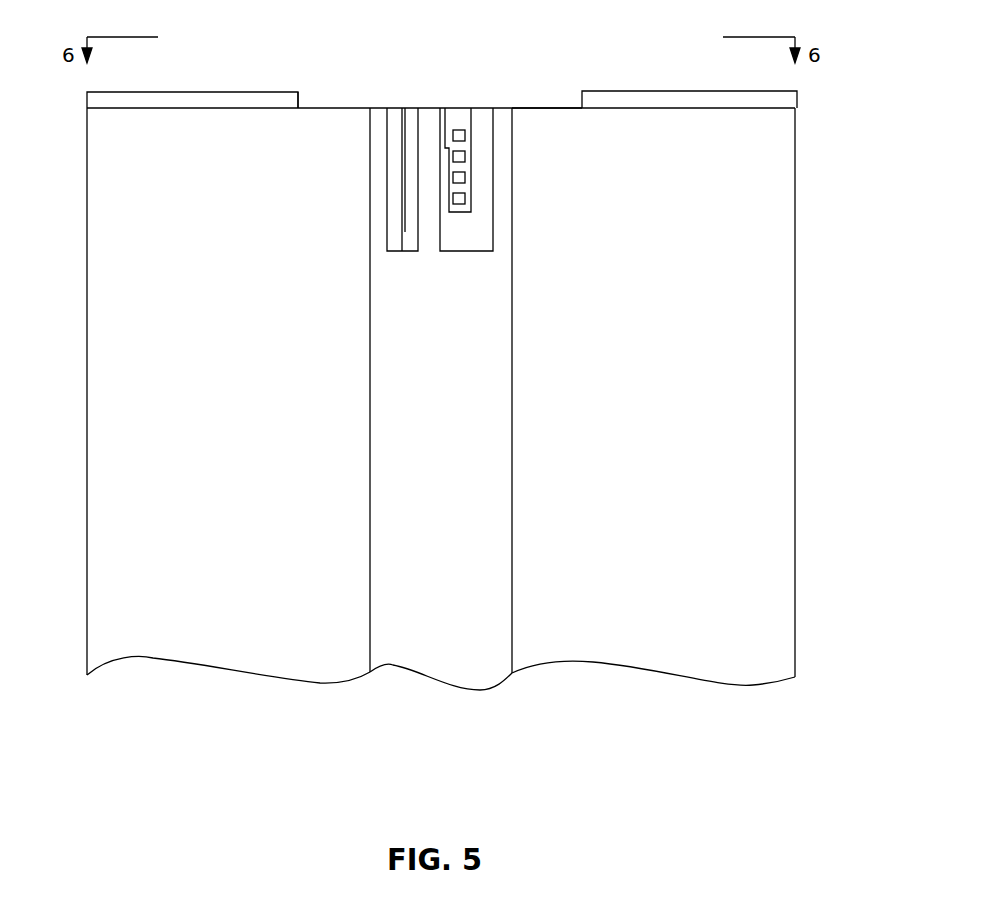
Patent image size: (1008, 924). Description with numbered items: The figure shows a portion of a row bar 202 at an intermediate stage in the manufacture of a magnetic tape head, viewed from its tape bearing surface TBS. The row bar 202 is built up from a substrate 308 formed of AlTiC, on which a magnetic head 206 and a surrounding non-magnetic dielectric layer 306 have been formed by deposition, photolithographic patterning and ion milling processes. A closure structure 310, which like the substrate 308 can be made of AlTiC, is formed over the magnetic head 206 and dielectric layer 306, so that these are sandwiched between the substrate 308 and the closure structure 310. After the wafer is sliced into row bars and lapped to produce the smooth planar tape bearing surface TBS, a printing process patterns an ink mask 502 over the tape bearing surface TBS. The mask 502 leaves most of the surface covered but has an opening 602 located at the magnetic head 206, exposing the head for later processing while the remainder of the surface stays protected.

The row bar 202 is at (810, 388).
The magnetic head 206 is at (387, 255).
The dielectric layer 306 is at (450, 392).
The substrate 308 is at (242, 392).
The closure structure 310 is at (677, 393).
The ink mask 502 is at (180, 100).
The opening 602 is at (300, 100).
The tape bearing surface TBS is at (545, 107).